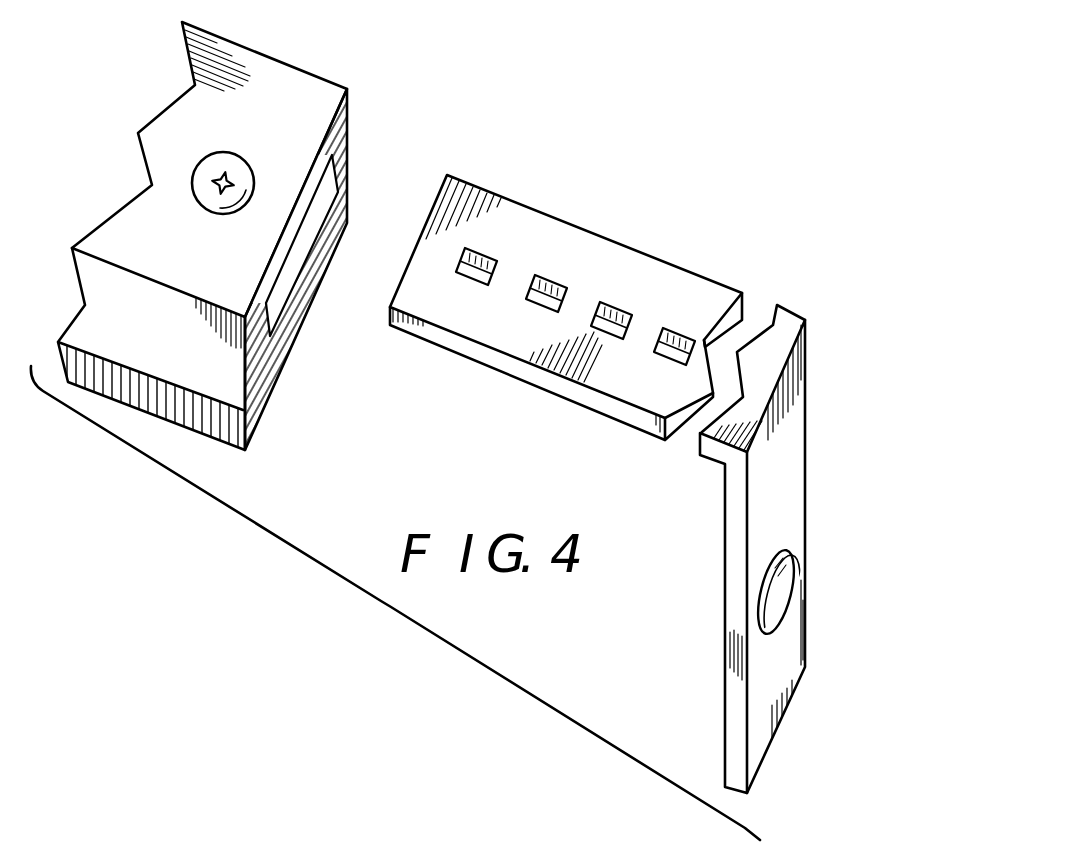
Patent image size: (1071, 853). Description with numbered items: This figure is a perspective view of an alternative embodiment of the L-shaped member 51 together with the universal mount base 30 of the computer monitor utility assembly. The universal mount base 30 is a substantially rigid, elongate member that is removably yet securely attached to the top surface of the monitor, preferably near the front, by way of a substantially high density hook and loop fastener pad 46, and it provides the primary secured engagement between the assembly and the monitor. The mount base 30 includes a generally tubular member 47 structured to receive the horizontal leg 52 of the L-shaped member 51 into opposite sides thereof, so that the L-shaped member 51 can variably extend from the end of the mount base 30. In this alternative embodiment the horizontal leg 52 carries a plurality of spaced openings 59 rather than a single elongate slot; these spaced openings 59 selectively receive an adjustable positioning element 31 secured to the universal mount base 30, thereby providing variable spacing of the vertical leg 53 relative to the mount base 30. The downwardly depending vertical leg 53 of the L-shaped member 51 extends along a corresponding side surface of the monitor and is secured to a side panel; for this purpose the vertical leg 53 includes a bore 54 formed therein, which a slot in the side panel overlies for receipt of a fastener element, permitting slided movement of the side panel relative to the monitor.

The universal mount base 30 is at (297, 46).
The fastener element 31 is at (227, 152).
The hook and loop fastener pad 46 is at (348, 195).
The tubular member 47 is at (350, 113).
The L-shaped member 51 is at (858, 233).
The horizontal leg 52 is at (630, 243).
The vertical leg 53 is at (808, 518).
The bore 54 is at (784, 586).
The spaced openings 59 is at (556, 282).